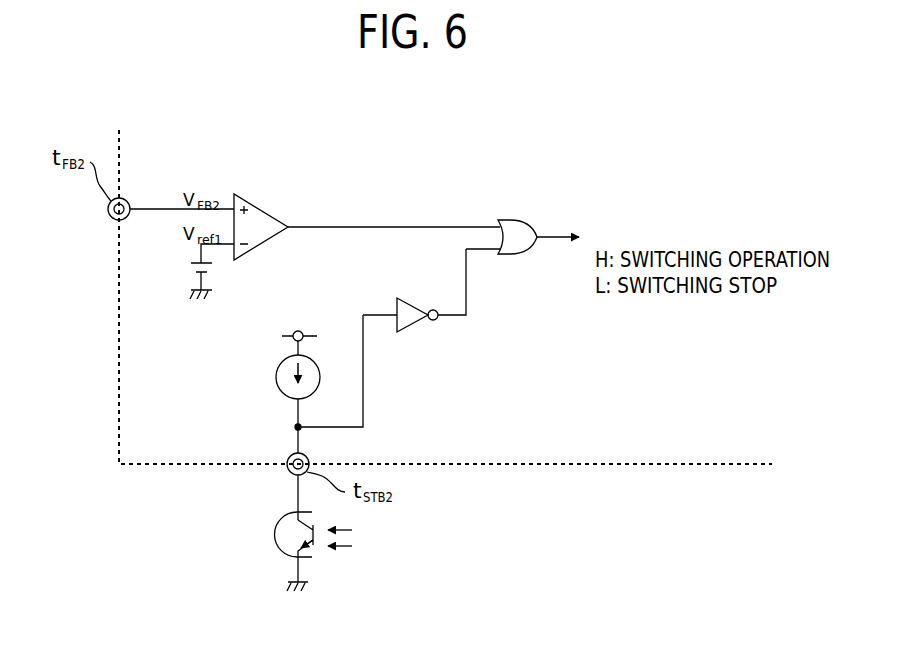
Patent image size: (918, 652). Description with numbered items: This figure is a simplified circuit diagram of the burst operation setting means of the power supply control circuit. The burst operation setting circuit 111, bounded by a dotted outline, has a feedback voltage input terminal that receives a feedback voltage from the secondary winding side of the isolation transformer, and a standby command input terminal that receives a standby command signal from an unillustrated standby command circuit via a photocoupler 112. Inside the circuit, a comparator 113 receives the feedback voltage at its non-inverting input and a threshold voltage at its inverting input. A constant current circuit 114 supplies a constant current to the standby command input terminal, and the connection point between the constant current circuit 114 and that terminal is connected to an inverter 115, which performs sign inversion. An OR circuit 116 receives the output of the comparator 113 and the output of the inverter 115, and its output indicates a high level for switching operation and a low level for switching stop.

The burst operation setting circuit 111 is at (114, 421).
The photocoupler 112 is at (275, 553).
The comparator 113 is at (262, 211).
The constant current circuit 114 is at (277, 369).
The inverter 115 is at (416, 305).
The OR circuit 116 is at (513, 219).